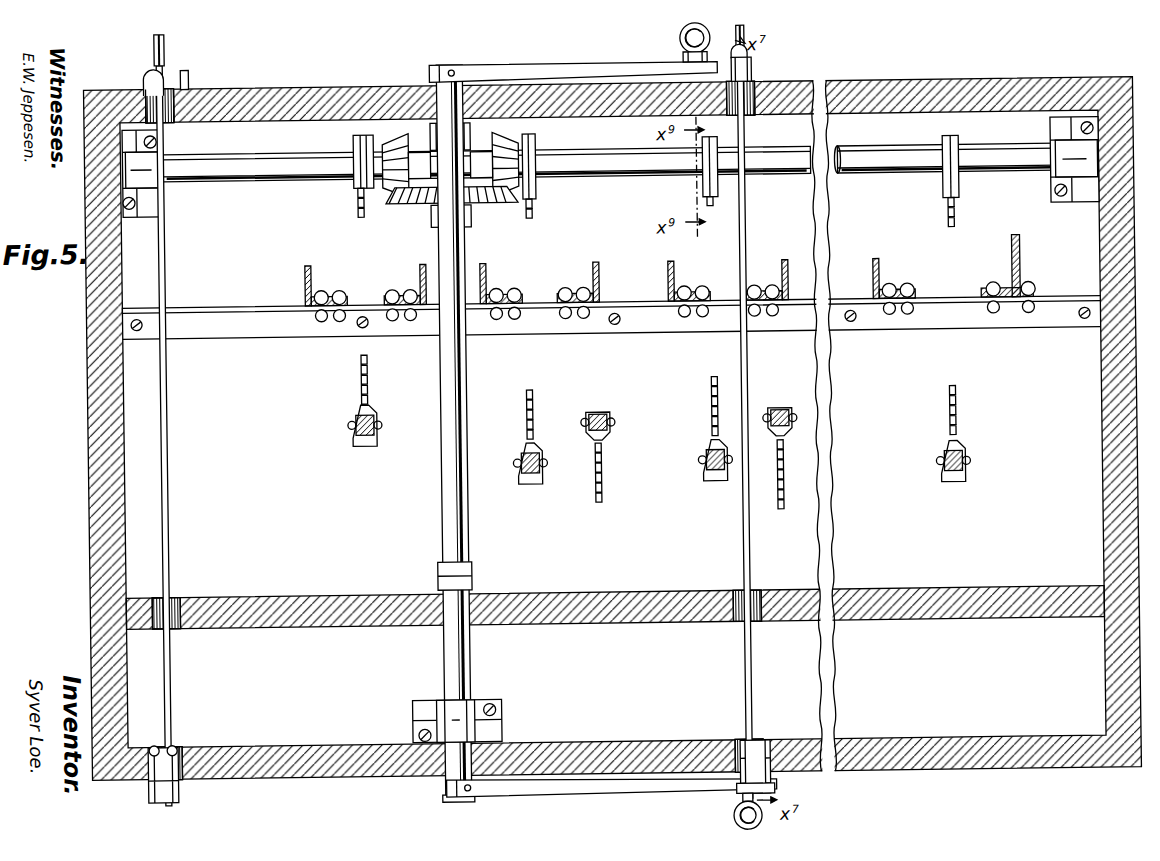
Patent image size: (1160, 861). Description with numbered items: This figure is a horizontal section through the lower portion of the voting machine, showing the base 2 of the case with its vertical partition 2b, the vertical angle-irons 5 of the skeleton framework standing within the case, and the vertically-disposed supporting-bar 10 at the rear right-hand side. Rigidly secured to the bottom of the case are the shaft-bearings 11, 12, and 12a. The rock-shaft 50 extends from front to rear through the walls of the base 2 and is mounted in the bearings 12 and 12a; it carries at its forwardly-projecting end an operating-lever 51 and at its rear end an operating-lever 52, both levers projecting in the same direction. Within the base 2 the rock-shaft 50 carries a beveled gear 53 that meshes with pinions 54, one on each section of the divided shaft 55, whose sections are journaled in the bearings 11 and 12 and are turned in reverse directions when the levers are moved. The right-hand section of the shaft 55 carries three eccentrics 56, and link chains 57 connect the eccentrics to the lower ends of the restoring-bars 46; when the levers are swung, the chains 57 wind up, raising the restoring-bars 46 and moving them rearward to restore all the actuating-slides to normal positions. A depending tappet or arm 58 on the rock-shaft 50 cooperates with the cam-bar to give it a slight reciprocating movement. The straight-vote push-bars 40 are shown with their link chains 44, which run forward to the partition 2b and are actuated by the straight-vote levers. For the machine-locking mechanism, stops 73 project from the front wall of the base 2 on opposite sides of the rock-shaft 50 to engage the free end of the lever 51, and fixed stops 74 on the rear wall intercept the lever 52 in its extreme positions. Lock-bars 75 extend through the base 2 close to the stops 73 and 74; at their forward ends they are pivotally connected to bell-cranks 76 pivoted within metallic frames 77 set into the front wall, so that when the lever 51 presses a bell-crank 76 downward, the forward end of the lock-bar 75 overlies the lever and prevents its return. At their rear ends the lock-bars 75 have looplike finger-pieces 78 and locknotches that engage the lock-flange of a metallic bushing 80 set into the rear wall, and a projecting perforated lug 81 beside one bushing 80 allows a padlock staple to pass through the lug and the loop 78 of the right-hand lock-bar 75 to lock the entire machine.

The base 2 is at (88, 420).
The vertical partition 2b is at (600, 593).
The vertical angle-irons 5 is at (420, 275).
The supporting-bar 10 is at (1022, 268).
The shaft-bearings 11 is at (152, 214).
The shaft-bearing 12 is at (468, 130).
The shaft-bearing 12a is at (500, 700).
The straight-vote push-bars 40 is at (602, 412).
The link chains 44 is at (603, 497).
The restoring-bars 46 is at (364, 436).
The rock-shaft 50 is at (440, 450).
The operating-lever 51 is at (612, 790).
The operating-lever 52 is at (602, 65).
The beveled gear 53 is at (503, 201).
The pinions 54 is at (522, 138).
The divided shaft 55 is at (240, 177).
The eccentrics 56 is at (540, 192).
The link chains 57 is at (363, 220).
The tappet or arm 58 is at (472, 572).
The stops 73 is at (772, 790).
The stops 74 is at (194, 70).
The lock-bars 75 is at (168, 407).
The bell-cranks 76 is at (738, 790).
The metallic frames 77 is at (760, 742).
The looplike finger-pieces 78 is at (170, 42).
The metallic bushing 80 is at (150, 85).
The perforated lug 81 is at (152, 66).